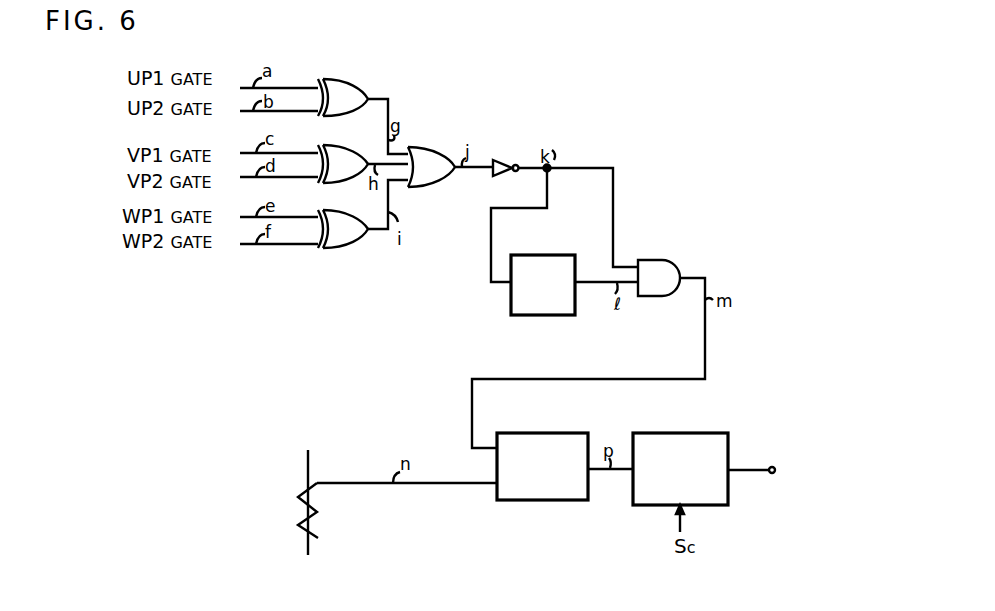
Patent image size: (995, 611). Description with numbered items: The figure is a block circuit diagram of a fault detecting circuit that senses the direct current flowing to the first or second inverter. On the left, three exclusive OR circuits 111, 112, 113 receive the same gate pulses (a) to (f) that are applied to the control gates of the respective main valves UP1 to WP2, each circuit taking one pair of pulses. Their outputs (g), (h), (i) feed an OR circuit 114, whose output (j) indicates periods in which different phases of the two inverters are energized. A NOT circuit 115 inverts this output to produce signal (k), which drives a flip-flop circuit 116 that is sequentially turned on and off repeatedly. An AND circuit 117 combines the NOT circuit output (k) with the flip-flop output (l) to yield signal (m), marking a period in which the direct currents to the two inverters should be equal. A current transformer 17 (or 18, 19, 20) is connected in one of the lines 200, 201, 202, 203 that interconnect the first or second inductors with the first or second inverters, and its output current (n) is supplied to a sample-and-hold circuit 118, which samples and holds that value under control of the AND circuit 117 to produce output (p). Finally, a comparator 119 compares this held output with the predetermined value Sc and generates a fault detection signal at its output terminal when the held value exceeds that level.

The exclusive OR circuit 111 is at (340, 80).
The exclusive OR circuit 112 is at (332, 146).
The exclusive OR circuit 113 is at (340, 248).
The OR circuit 114 is at (425, 147).
The NOT circuit 115 is at (500, 160).
The flip-flop circuit 116 is at (553, 255).
The AND circuit 117 is at (665, 260).
The sample-and-hold circuit 118 is at (568, 433).
The comparator 119 is at (700, 433).
The current transformer 17 is at (378, 510).
The current transformer 18 is at (378, 510).
The current transformer 19 is at (378, 510).
The current transformer 20 is at (320, 513).
The line 200 is at (557, 510).
The line 201 is at (557, 510).
The line 202 is at (426, 518).
The line 203 is at (426, 518).